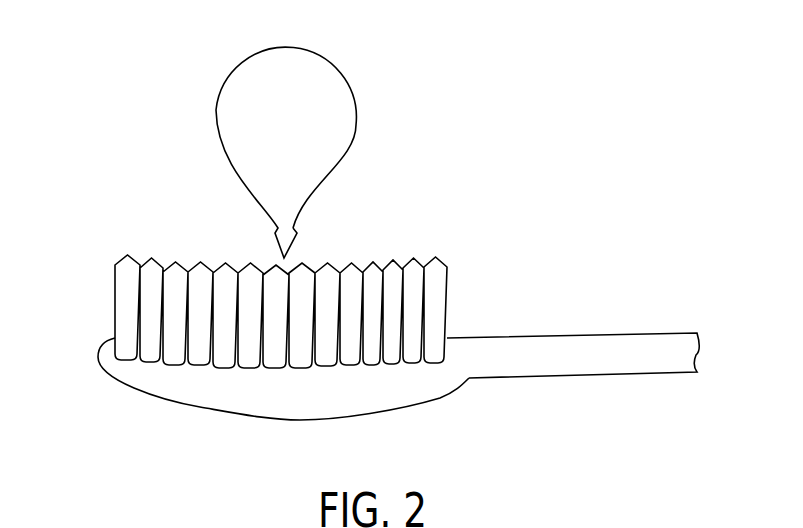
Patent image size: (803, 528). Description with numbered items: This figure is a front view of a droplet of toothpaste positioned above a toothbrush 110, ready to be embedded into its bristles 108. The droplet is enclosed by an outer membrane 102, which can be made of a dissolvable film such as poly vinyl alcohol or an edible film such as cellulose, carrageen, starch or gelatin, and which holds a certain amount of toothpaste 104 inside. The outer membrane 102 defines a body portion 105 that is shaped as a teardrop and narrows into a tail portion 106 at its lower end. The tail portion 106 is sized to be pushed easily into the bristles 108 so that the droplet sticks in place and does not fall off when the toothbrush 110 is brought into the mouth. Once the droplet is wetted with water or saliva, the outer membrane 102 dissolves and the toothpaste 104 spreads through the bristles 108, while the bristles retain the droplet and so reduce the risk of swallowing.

The outer membrane 102 is at (337, 65).
The toothpaste 104 is at (237, 93).
The body portion 105 is at (353, 142).
The tail portion 106 is at (317, 192).
The bristles 108 is at (115, 308).
The toothbrush 110 is at (420, 405).